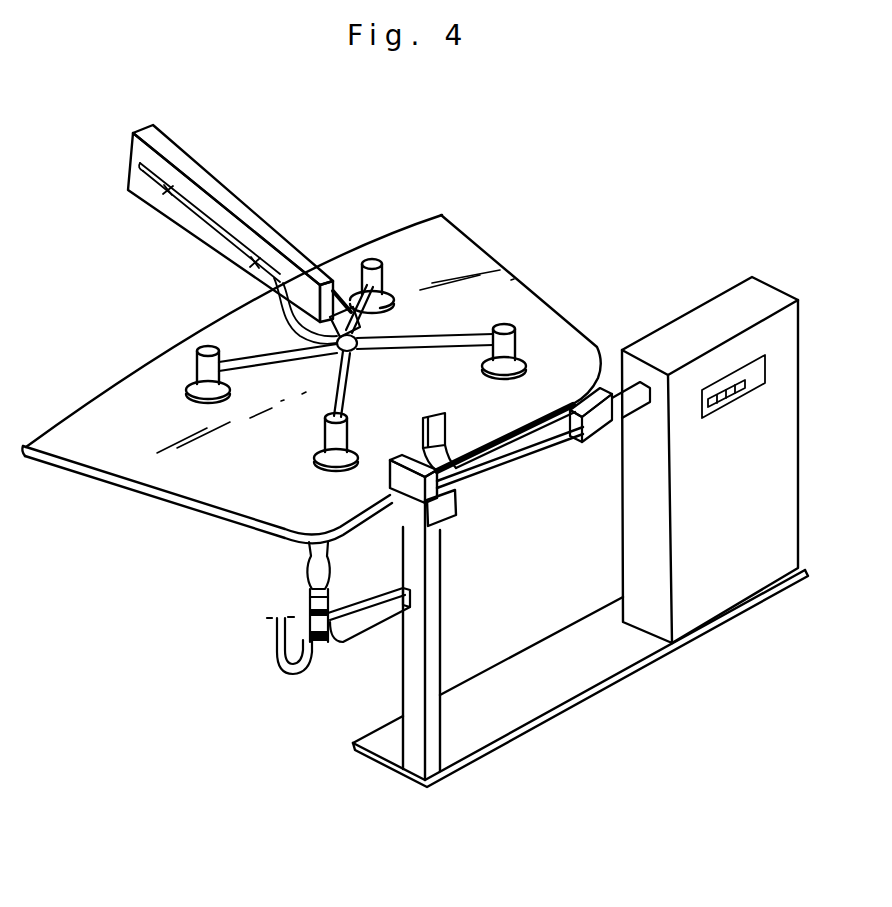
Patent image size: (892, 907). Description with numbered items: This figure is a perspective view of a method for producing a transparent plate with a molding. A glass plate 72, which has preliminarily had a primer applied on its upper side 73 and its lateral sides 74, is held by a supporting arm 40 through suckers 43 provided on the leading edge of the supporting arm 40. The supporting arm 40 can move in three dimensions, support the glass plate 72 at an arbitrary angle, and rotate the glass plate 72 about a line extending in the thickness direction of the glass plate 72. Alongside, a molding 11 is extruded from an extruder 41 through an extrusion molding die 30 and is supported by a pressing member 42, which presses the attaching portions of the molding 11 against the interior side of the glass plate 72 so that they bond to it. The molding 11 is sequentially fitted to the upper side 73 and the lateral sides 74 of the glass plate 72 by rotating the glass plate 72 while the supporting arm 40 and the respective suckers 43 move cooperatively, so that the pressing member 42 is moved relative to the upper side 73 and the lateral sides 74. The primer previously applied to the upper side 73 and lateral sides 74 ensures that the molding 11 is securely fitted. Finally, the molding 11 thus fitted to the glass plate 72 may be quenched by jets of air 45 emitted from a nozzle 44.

The molding 11 is at (530, 455).
The extrusion molding die 30 is at (608, 437).
The supporting arm 40 is at (229, 198).
The extruder 41 is at (710, 298).
The pressing member 42 is at (413, 520).
The suckers 43 is at (187, 400).
The nozzle 44 is at (335, 572).
The jets of air 45 is at (305, 548).
The glass plate 72 is at (157, 367).
The upper side 73 is at (553, 405).
The lateral sides 74 is at (478, 246).